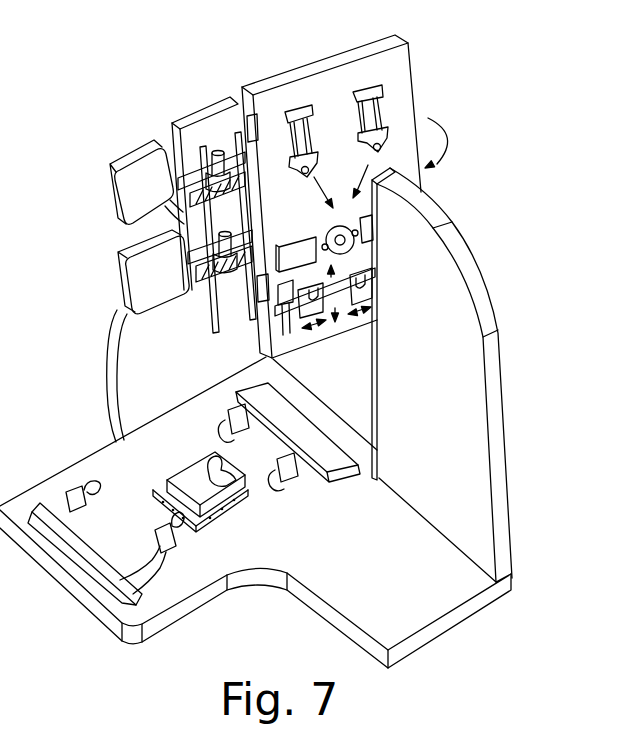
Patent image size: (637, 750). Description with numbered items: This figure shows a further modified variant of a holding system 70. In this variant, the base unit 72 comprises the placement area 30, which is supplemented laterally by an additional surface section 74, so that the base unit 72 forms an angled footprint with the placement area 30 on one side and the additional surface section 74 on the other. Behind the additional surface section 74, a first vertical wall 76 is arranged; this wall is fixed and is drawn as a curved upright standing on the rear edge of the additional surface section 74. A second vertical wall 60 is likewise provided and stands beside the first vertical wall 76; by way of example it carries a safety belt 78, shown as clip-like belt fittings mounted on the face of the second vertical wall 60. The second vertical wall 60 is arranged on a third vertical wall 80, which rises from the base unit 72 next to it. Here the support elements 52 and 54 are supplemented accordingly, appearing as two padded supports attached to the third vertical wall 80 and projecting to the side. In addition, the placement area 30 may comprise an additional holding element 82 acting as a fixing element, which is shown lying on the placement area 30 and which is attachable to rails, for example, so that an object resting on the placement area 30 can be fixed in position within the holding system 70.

The placement area 30 is at (180, 467).
The support element 52 is at (137, 179).
The support element 54 is at (130, 260).
The second vertical wall 60 is at (378, 68).
The holding system 70 is at (502, 219).
The base unit 72 is at (96, 463).
The additional surface section 74 is at (455, 594).
The first vertical wall 76 is at (478, 384).
The safety belt 78 is at (393, 103).
The third vertical wall 80 is at (210, 133).
The additional holding element 82 is at (208, 486).